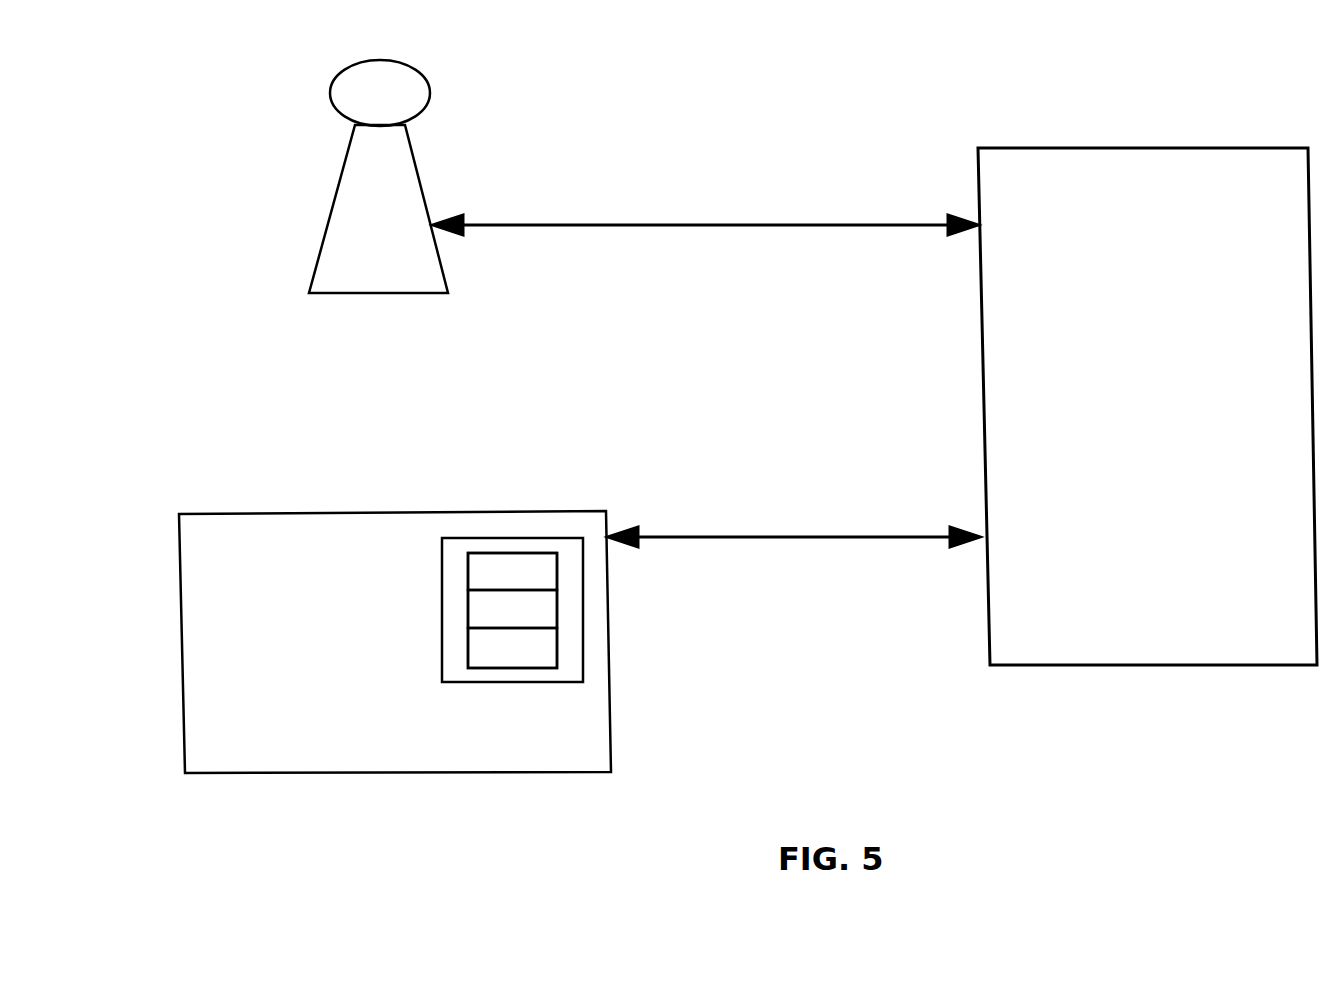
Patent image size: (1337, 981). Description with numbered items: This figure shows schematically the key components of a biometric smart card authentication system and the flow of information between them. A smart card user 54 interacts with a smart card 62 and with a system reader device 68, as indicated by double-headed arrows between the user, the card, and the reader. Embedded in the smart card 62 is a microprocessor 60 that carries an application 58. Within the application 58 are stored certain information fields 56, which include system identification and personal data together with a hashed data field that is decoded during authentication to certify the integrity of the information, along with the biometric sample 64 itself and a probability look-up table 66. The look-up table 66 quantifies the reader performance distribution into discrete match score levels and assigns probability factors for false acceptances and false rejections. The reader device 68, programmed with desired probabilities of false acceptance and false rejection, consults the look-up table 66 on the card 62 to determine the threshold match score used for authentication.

The smart card user 54 is at (415, 60).
The information fields 56 is at (557, 577).
The application 58 is at (492, 550).
The microprocessor 60 is at (530, 537).
The smart card 62 is at (308, 773).
The biometric sample 64 is at (557, 601).
The probability look-up table 66 is at (557, 653).
The reader device 68 is at (1142, 147).